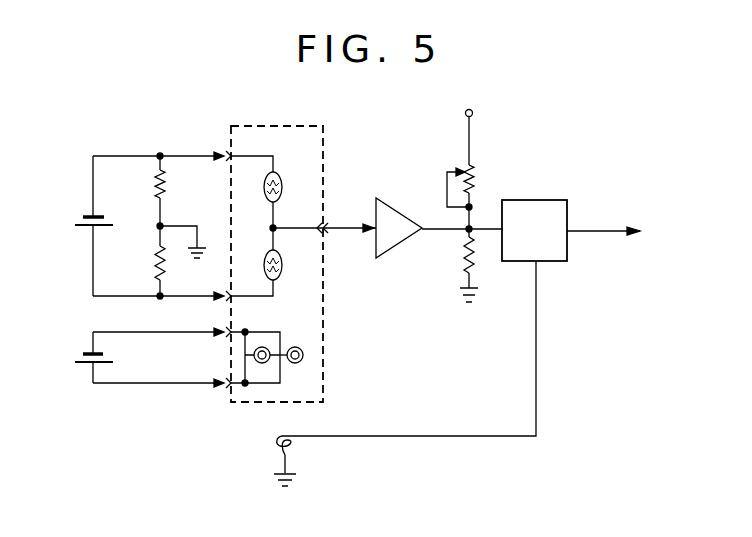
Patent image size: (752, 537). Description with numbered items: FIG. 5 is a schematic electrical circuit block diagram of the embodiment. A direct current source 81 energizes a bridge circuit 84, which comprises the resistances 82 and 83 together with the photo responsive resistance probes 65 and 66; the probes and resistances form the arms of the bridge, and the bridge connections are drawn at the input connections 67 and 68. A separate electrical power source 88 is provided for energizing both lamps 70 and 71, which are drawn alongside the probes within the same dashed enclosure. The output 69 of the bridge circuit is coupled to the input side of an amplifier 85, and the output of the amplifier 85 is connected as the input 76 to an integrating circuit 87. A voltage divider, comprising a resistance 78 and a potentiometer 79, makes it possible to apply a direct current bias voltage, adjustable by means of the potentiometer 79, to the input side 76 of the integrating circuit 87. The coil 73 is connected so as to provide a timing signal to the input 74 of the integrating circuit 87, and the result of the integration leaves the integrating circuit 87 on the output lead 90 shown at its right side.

The photo responsive resistance probe 65 is at (278, 187).
The photo responsive resistance probe 66 is at (278, 268).
The input connection 67 is at (221, 153).
The input connection 68 is at (222, 300).
The output of the bridge circuit 69 is at (327, 230).
The lamp 70 is at (264, 349).
The lamp 71 is at (303, 353).
The coil 73 is at (280, 441).
The input of the integrating circuit 74 is at (538, 266).
The input of the integrating circuit 76 is at (502, 230).
The resistance 78 is at (465, 262).
The potentiometer 79 is at (465, 170).
The direct current source 81 is at (88, 216).
The resistance 82 is at (157, 181).
The resistance 83 is at (157, 263).
The bridge circuit 84 is at (172, 134).
The amplifier 85 is at (388, 214).
The integrating circuit 87 is at (521, 238).
The electrical power source 88 is at (90, 352).
The output lead 90 is at (570, 238).